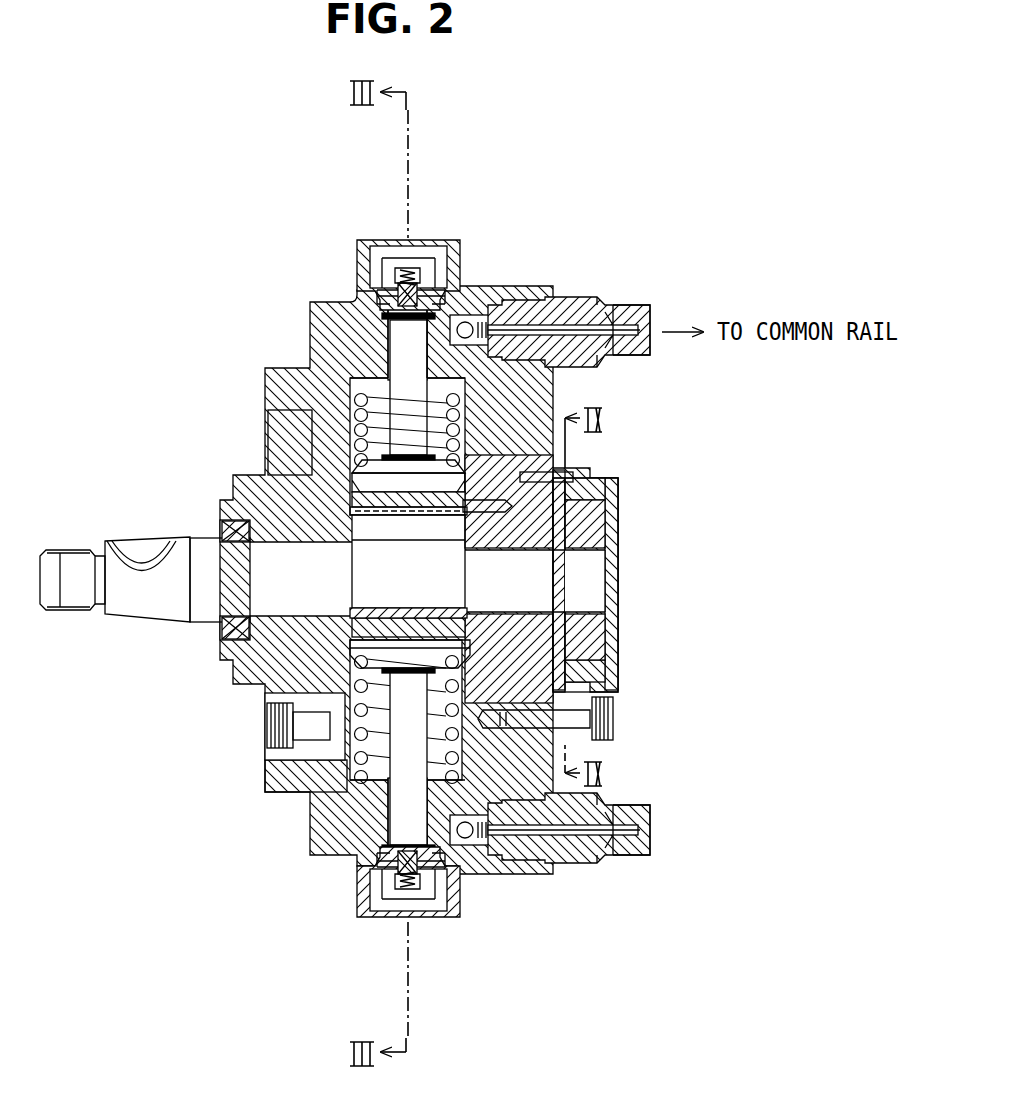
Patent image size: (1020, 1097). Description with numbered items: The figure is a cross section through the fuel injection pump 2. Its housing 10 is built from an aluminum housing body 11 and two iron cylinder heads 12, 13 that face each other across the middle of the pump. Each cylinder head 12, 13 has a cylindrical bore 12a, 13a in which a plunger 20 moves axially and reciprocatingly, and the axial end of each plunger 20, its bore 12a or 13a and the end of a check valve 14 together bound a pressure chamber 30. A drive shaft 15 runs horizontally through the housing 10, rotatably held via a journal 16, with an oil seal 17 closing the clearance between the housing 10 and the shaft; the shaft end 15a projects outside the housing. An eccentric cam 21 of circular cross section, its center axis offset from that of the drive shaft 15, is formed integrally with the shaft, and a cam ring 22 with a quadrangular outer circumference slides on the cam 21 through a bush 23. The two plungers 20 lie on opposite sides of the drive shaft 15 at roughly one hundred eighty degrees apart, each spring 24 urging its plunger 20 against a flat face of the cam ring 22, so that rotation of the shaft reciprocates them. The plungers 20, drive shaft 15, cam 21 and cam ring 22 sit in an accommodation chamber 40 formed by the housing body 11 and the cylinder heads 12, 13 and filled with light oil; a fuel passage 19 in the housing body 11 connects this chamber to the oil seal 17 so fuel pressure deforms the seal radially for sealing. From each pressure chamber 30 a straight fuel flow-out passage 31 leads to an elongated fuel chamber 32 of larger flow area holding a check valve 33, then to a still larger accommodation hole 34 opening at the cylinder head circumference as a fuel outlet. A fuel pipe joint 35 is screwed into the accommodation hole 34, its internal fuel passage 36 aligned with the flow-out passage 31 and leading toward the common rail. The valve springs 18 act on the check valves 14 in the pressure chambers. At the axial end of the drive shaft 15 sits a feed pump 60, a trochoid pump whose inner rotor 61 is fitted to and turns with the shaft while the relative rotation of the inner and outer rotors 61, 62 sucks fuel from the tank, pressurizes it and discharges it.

The fuel injection pump 2 is at (176, 202).
The housing 10 is at (582, 392).
The housing body 11 is at (598, 480).
The cylinder head 12 is at (392, 335).
The cylindrical bore 12a is at (398, 366).
The cylinder head 13 is at (398, 812).
The cylindrical bore 13a is at (395, 780).
The check valve 14 is at (405, 240).
The drive shaft 15 is at (200, 540).
The shaft end 15a is at (80, 560).
The journal 16 is at (268, 635).
The oil seal 17 is at (225, 633).
The valve spring 18 is at (440, 248).
The fuel passage 19 is at (350, 510).
The plunger 20 is at (397, 347).
The cam 21 is at (350, 492).
The cam ring 22 is at (352, 468).
The bush 23 is at (532, 482).
The spring 24 is at (357, 405).
The pressure chamber 30 is at (372, 244).
The fuel flow-out passage 31 is at (465, 320).
The fuel chamber 32 is at (548, 300).
The check valve 33 is at (483, 322).
The accommodation hole 34 is at (560, 305).
The fuel pipe joint 35 is at (612, 305).
The fuel passage 36 is at (640, 308).
The accommodation chamber 40 is at (600, 708).
The feed pump 60 is at (642, 590).
The inner rotor 61 is at (588, 525).
The outer rotor 62 is at (562, 508).